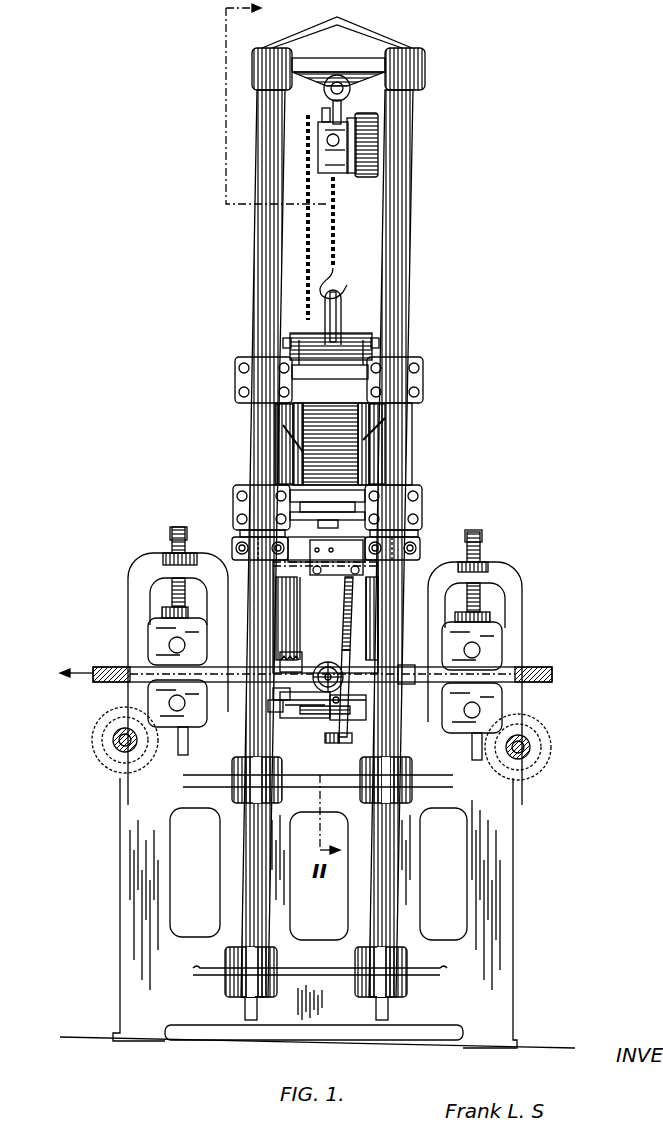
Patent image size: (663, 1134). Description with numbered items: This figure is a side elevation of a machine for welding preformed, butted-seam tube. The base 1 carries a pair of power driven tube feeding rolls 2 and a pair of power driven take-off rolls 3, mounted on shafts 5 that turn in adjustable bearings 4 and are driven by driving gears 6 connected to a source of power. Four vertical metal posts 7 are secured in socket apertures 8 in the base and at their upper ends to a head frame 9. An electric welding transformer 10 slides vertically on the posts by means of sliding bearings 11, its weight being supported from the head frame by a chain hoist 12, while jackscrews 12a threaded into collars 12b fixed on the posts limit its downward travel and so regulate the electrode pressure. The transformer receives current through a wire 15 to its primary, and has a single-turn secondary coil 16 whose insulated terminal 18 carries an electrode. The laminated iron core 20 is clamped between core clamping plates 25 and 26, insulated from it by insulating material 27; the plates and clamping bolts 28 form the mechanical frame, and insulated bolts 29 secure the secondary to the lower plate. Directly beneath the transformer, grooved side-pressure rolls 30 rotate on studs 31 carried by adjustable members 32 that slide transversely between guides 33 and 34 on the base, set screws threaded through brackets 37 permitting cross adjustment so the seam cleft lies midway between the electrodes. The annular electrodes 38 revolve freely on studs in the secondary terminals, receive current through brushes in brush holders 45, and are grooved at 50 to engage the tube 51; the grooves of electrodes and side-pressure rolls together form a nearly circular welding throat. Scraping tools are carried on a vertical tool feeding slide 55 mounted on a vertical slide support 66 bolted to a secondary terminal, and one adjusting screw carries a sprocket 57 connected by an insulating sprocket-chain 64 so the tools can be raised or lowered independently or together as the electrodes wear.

The base 1 is at (513, 875).
The tube feeding rolls 2 is at (490, 624).
The take-off rolls 3 is at (163, 612).
The adjustable bearings 4 is at (150, 650).
The shafts 5 is at (175, 645).
The driving gears 6 is at (97, 757).
The posts 7 is at (257, 258).
The socket apertures 8 is at (232, 795).
The head frame 9 is at (396, 47).
The electric welding transformer 10 is at (410, 446).
The sliding bearings 11 is at (238, 380).
The chain hoist 12 is at (372, 140).
The jackscrews 12a is at (245, 563).
The collars 12b is at (248, 534).
The wire 15 is at (360, 336).
The secondary coil 16 is at (342, 345).
The secondary terminal 18 is at (312, 578).
The laminated iron core 20 is at (266, 433).
The core clamping plate 25 is at (372, 376).
The core clamping plate 26 is at (378, 503).
The insulating material 27 is at (300, 343).
The clamping bolts 28 is at (281, 425).
The insulated bolts 29 is at (418, 534).
The side-pressure rolls 30 is at (290, 658).
The studs 31 is at (322, 720).
The adjustable members 32 is at (312, 718).
The guide 33 is at (357, 703).
The guide 34 is at (273, 703).
The brackets 37 is at (283, 695).
The electrodes 38 is at (283, 640).
The brush holders 45 is at (325, 616).
The groove 50 is at (407, 670).
The tube 51 is at (552, 680).
The vertical tool feeding slide 55 is at (340, 658).
The sprocket 57 is at (346, 740).
The sprocket-chain 64 is at (333, 743).
The vertical slide support 66 is at (350, 620).